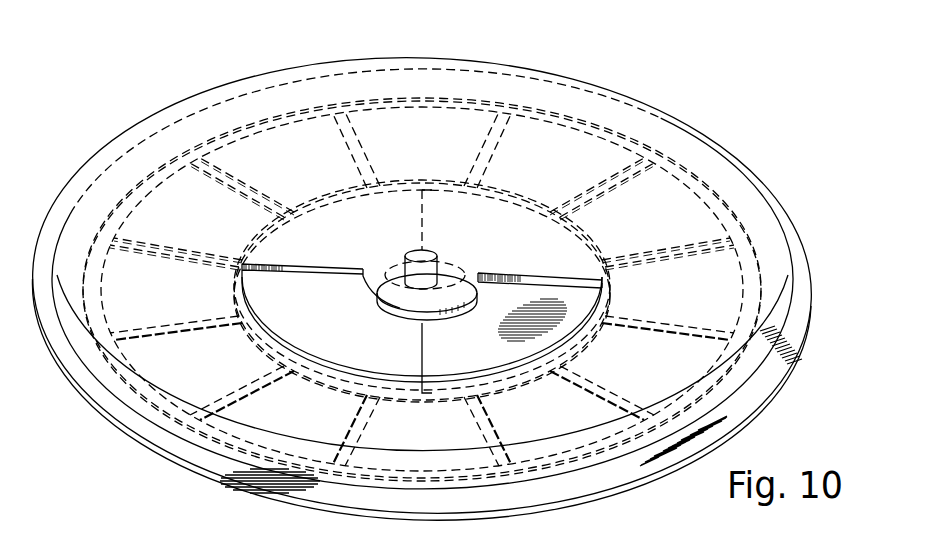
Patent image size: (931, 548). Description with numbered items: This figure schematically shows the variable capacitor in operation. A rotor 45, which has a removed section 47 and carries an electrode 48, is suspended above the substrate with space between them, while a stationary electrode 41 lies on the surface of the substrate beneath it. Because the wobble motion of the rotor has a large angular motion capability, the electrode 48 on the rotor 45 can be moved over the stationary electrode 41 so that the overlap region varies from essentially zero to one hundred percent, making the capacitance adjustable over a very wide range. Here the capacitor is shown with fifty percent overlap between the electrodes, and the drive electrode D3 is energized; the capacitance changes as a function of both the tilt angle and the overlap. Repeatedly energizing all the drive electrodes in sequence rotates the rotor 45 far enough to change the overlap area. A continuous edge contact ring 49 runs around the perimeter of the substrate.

The rotor 45 is at (307, 66).
The electrode 48 is at (309, 240).
The electrode 41 is at (556, 247).
The removed section 47 is at (377, 320).
The drive electrode D3 is at (714, 292).
The continuous edge contact ring 49 is at (800, 307).